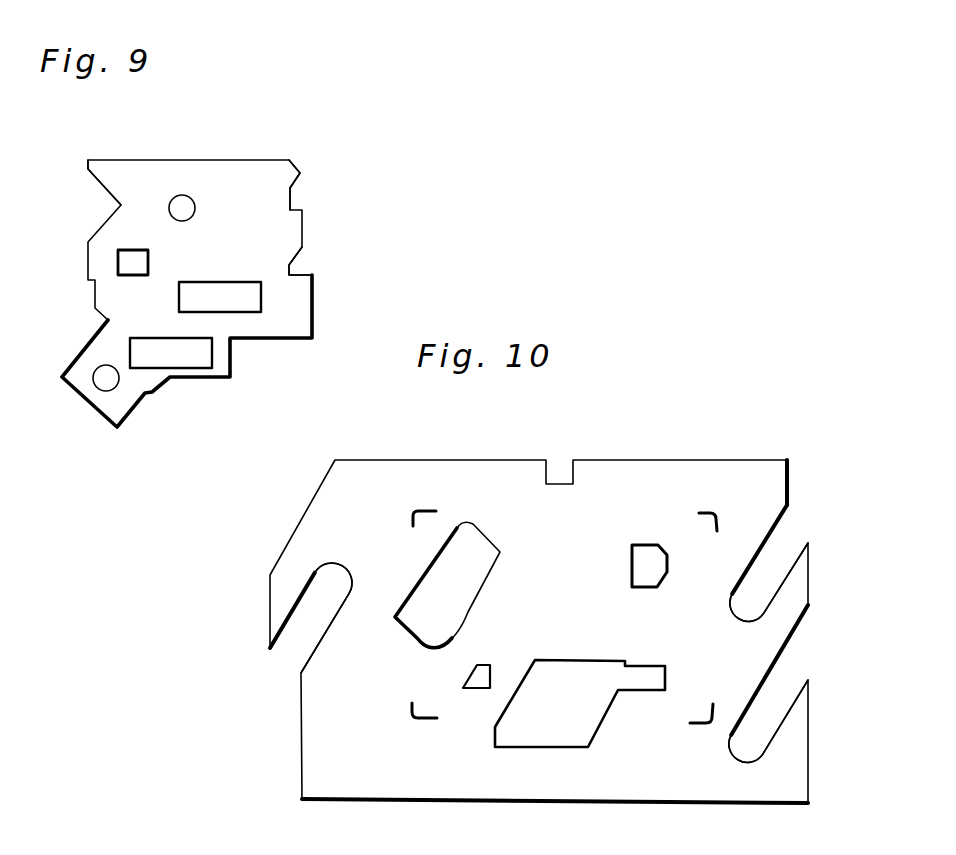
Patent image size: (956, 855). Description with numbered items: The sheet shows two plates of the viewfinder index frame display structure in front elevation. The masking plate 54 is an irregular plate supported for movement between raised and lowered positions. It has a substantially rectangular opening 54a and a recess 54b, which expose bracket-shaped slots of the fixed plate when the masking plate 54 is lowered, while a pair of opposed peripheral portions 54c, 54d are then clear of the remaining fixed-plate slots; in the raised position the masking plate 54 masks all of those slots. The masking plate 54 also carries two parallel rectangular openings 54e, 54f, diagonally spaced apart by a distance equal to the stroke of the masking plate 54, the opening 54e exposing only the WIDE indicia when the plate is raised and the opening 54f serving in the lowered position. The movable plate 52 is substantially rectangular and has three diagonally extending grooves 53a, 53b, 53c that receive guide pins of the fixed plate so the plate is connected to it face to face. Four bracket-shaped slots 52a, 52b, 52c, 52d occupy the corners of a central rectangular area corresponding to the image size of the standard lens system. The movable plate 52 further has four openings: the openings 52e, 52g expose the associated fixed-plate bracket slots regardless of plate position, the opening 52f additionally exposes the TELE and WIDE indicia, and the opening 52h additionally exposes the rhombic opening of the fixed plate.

In FIG. 9, the masking plate 54 is at (182, 160).
In FIG. 9, the rectangular opening 54a is at (118, 266).
In FIG. 9, the recess 54b is at (297, 270).
In FIG. 9, the peripheral portion 54c is at (290, 162).
In FIG. 9, the peripheral portion 54d is at (97, 166).
In FIG. 9, the rectangular opening 54e is at (253, 298).
In FIG. 9, the rectangular opening 54f is at (163, 362).
In FIG. 10, the movable plate 52 is at (617, 478).
In FIG. 10, the bracket-shaped slot 52a is at (718, 510).
In FIG. 10, the bracket-shaped slot 52b is at (697, 727).
In FIG. 10, the bracket-shaped slot 52c is at (412, 712).
In FIG. 10, the bracket-shaped slot 52d is at (428, 505).
In FIG. 10, the opening 52e is at (648, 545).
In FIG. 10, the opening 52f is at (603, 720).
In FIG. 10, the opening 52g is at (478, 690).
In FIG. 10, the opening 52h is at (417, 572).
In FIG. 10, the diagonally extending groove 53a is at (760, 550).
In FIG. 10, the diagonally extending groove 53b is at (767, 673).
In FIG. 10, the diagonally extending groove 53c is at (327, 627).